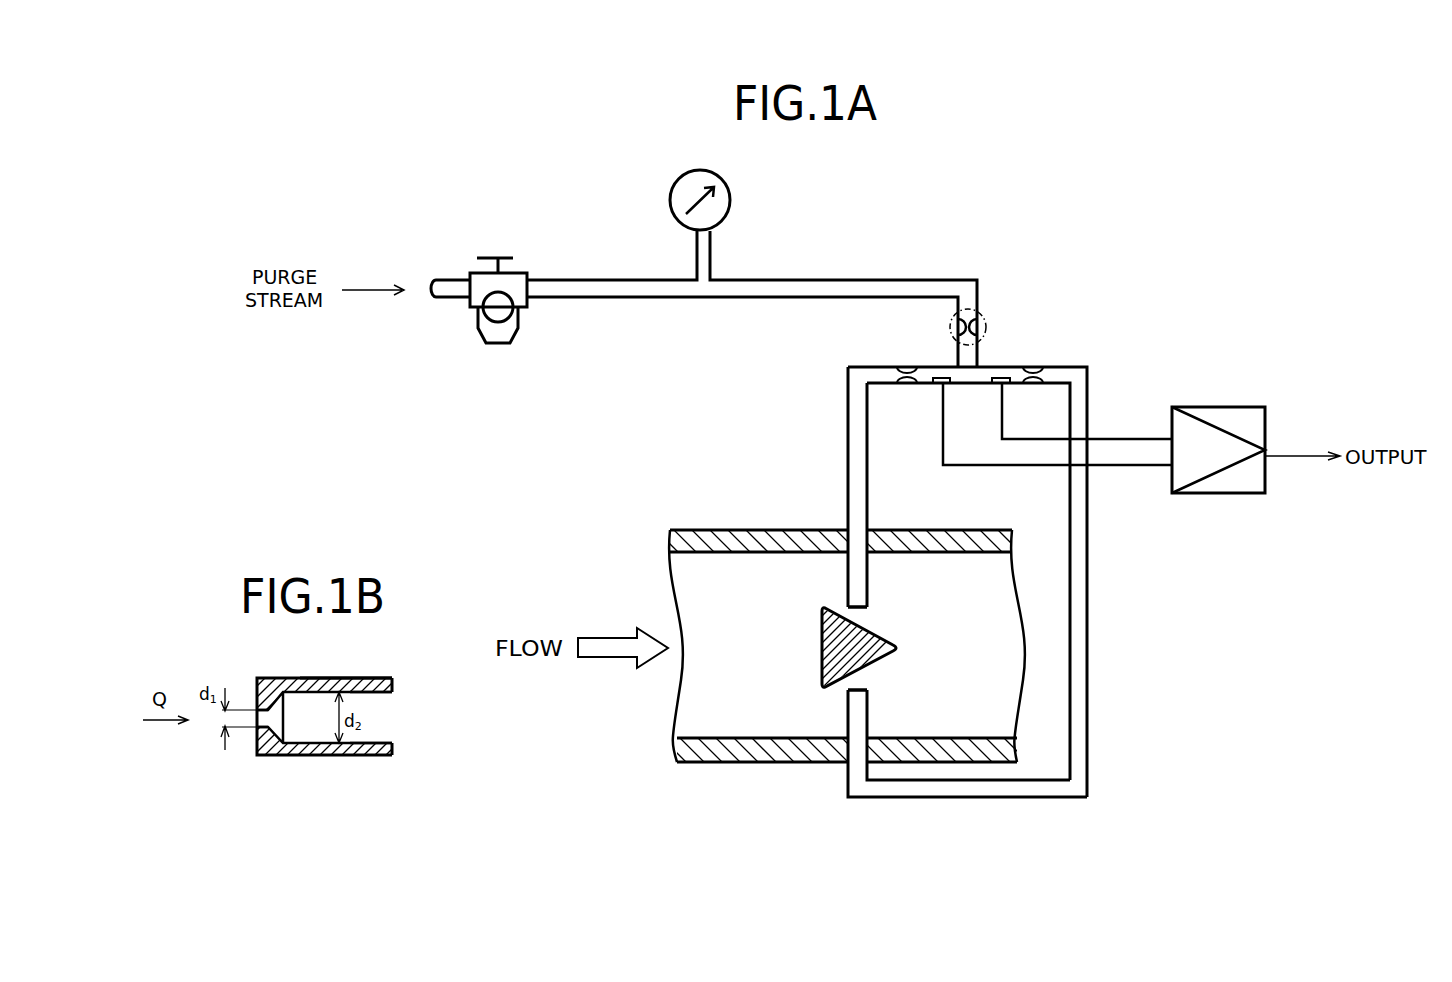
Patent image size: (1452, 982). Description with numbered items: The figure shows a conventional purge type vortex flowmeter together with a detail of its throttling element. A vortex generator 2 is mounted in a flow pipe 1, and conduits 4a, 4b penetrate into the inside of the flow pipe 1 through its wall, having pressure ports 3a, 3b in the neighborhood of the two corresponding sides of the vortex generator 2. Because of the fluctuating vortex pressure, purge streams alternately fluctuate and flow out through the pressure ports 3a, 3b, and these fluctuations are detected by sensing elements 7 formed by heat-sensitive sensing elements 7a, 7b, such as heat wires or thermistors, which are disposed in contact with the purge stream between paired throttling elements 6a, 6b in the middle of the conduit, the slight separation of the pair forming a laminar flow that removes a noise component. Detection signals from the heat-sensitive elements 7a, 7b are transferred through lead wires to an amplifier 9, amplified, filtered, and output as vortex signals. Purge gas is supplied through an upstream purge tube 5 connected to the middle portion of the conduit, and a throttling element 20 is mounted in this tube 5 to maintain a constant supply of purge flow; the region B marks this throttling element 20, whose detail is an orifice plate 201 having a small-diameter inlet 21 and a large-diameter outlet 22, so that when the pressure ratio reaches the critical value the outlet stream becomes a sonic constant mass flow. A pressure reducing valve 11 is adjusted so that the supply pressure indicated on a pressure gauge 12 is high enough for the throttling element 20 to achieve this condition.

In FIG. 1A, the flow pipe 1 is at (766, 763).
In FIG. 1A, the vortex generator 2 is at (820, 660).
In FIG. 1A, the pressure port 3a is at (868, 609).
In FIG. 1A, the pressure port 3b is at (868, 689).
In FIG. 1A, the conduit 4a is at (848, 440).
In FIG. 1A, the conduit 4b is at (998, 797).
In FIG. 1A, the upstream purge tube 5 is at (763, 279).
In FIG. 1A, the throttling element 6a is at (908, 365).
In FIG. 1A, the throttling element 6b is at (1035, 365).
In FIG. 1A, the sensing elements 7 is at (1000, 430).
In FIG. 1A, the sensing element 7a is at (946, 388).
In FIG. 1A, the sensing element 7b is at (998, 388).
In FIG. 1A, the amplifier 9 is at (1222, 407).
In FIG. 1A, the pressure reducing valve 11 is at (489, 337).
In FIG. 1A, the pressure gauge 12 is at (730, 199).
In FIG. 1A, the throttling element 20 is at (973, 328).
In FIG. 1B, the throttling element 20 is at (337, 767).
In FIG. 1B, the orifice plate 201 is at (360, 678).
In FIG. 1B, the inlet 21 is at (255, 724).
In FIG. 1B, the outlet 22 is at (392, 718).
In FIG. 1A, the orifice detail region B is at (983, 311).